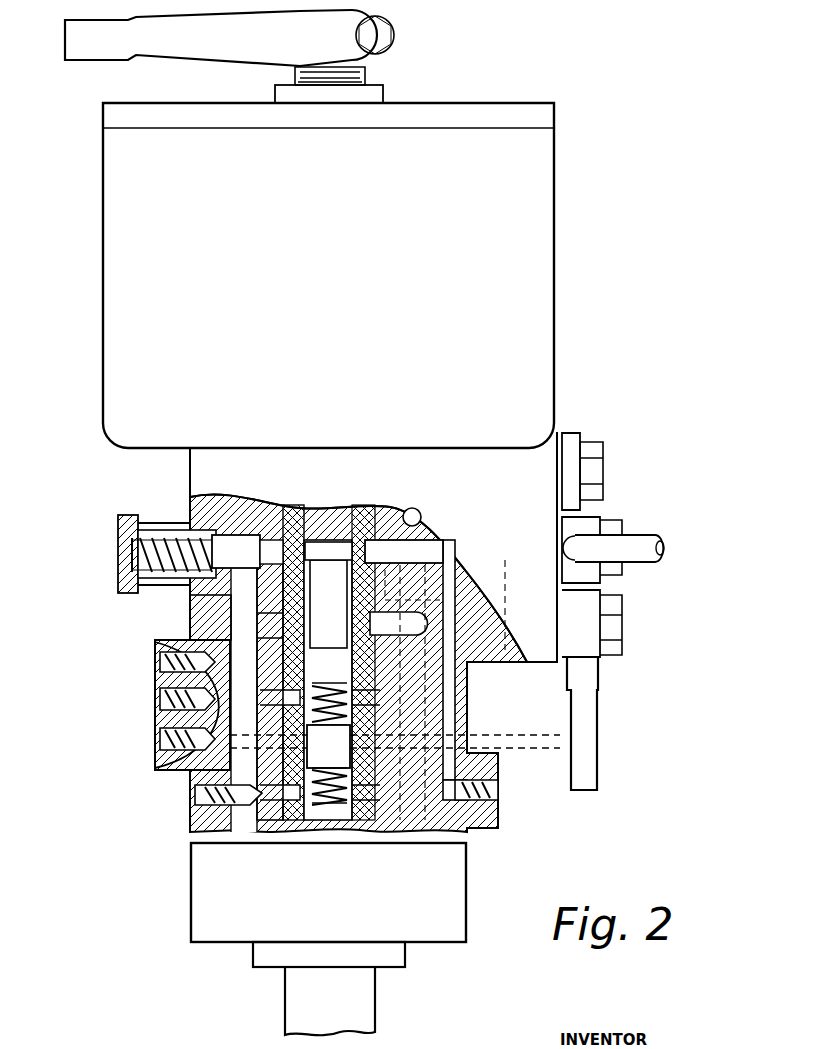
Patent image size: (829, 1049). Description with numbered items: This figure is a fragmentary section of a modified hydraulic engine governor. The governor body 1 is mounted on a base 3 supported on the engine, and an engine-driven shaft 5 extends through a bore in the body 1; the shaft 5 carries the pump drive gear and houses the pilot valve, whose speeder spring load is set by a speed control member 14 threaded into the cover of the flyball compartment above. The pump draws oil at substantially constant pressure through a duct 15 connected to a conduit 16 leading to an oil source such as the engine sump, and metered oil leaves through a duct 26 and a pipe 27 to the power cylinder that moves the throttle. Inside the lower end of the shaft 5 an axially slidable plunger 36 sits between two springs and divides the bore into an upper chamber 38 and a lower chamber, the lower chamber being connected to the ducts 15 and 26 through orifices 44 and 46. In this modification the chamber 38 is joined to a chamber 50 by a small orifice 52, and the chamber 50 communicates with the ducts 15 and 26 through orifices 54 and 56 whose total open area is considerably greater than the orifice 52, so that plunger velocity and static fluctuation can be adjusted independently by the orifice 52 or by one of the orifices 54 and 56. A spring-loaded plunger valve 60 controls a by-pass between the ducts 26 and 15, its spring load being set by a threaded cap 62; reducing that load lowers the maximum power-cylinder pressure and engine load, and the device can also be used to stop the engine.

The governor body 1 is at (222, 470).
The base 3 is at (205, 899).
The shaft 5 is at (293, 995).
The speed control member 14 is at (265, 76).
The duct 15 is at (245, 603).
The conduit 16 is at (585, 738).
The duct 26 is at (440, 550).
The pipe 27 is at (630, 545).
The plunger 36 is at (340, 755).
The upper chamber 38 is at (395, 712).
The orifice 44 is at (265, 793).
The orifice 46 is at (470, 830).
The chamber 50 is at (195, 695).
The small orifice 52 is at (190, 730).
The orifice 54 is at (185, 660).
The orifice 56 is at (190, 760).
The plunger valve 60 is at (230, 545).
The threaded cap 62 is at (120, 527).